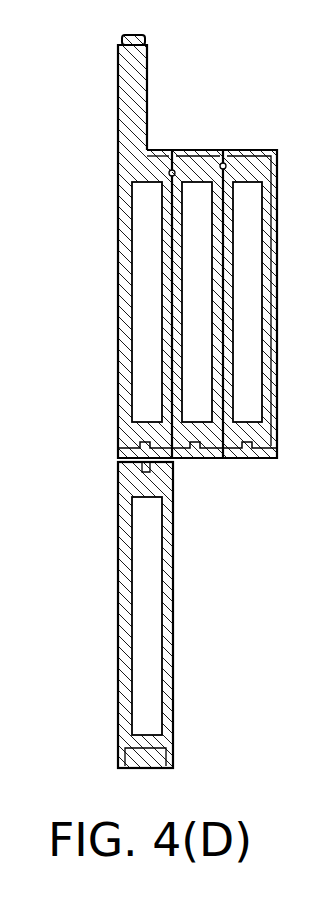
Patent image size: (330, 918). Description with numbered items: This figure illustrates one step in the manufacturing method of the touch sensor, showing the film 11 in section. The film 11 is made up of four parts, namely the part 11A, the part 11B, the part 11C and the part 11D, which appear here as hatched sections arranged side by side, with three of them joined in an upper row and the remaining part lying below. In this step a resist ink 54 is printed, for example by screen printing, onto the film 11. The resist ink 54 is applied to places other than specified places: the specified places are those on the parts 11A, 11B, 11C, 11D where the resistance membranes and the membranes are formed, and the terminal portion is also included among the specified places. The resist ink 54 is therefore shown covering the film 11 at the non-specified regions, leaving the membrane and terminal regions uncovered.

The film 11 is at (225, 118).
The part 11A is at (158, 160).
The part 11B is at (174, 580).
The part 11C is at (255, 153).
The part 11D is at (217, 457).
The resist ink 54 is at (140, 72).